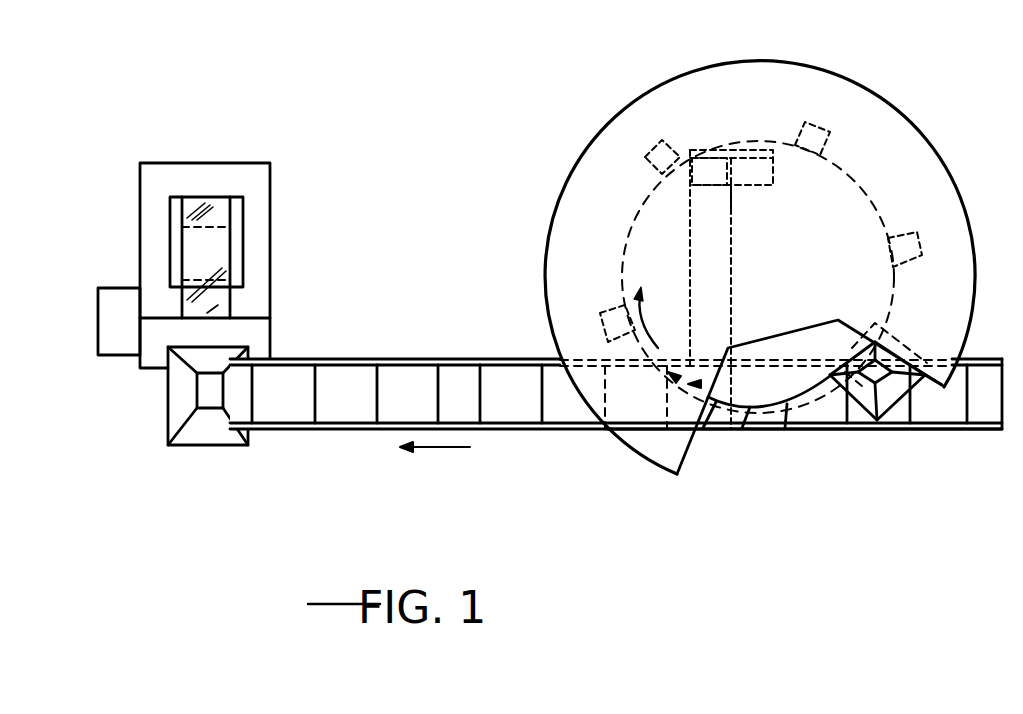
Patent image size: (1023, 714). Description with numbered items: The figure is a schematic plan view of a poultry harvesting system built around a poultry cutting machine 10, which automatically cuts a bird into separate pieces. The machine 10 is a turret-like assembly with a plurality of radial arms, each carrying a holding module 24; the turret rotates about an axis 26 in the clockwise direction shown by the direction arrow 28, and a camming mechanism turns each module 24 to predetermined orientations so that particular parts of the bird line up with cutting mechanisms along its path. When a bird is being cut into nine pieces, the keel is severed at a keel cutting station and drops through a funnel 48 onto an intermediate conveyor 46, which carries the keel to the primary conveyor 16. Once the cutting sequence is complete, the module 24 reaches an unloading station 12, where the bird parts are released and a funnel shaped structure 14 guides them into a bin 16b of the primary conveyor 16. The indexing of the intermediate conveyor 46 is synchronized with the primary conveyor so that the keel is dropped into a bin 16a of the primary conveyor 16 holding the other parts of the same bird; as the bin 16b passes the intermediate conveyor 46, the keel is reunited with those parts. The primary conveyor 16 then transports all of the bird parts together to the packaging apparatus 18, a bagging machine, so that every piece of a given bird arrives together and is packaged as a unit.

The poultry cutting machine 10 is at (880, 81).
The unloading station 12 is at (859, 441).
The funnel shaped structure 14 is at (887, 405).
The primary conveyor 16 is at (407, 342).
The bin of the primary conveyor 16a is at (707, 420).
The bin of the primary conveyor 16b is at (888, 402).
The packaging apparatus 18 is at (298, 162).
The holding module 24 is at (660, 140).
The axis 26 is at (758, 273).
The direction arrow 28 is at (648, 308).
The intermediate conveyor 46 is at (733, 215).
The funnel 48 is at (773, 155).